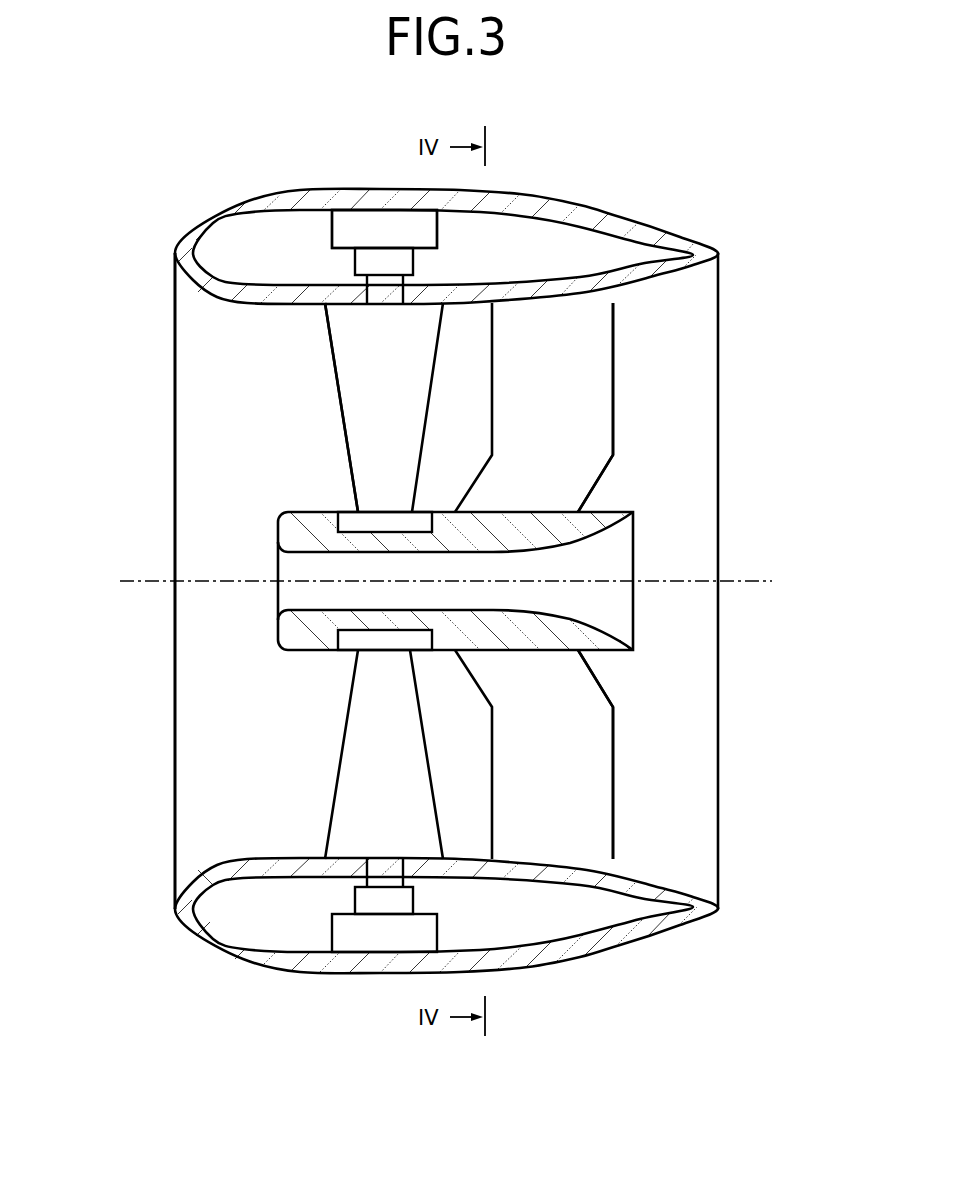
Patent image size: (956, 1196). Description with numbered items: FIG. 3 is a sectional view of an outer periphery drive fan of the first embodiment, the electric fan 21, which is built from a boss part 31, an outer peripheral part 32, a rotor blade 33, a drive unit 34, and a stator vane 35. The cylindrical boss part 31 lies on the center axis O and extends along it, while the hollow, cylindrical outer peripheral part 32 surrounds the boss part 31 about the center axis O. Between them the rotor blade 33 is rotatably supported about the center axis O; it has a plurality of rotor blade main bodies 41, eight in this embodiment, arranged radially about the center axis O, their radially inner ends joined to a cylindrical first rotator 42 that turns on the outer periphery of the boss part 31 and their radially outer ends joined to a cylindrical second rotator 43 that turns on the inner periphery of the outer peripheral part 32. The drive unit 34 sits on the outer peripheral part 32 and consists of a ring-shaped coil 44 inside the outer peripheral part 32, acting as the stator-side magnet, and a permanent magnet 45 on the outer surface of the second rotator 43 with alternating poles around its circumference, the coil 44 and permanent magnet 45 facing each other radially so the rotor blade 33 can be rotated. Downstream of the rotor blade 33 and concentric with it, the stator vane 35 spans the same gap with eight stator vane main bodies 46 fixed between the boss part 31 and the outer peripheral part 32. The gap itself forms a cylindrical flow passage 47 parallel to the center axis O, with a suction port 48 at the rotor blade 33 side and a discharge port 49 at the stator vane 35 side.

The electric fan 21 is at (127, 337).
The boss part 31 is at (268, 531).
The outer peripheral part 32 is at (680, 226).
The rotor blade 33 is at (322, 373).
The drive unit 34 is at (456, 228).
The stator vane 35 is at (628, 372).
The rotor blade main body 41 is at (360, 425).
The first rotator 42 is at (385, 640).
The second rotator 43 is at (385, 874).
The coil 44 is at (385, 228).
The permanent magnet 45 is at (385, 262).
The stator vane main body 46 is at (578, 427).
The flow passage 47 is at (467, 825).
The suction port 48 is at (175, 735).
The discharge port 49 is at (718, 706).
The center axis O is at (762, 584).